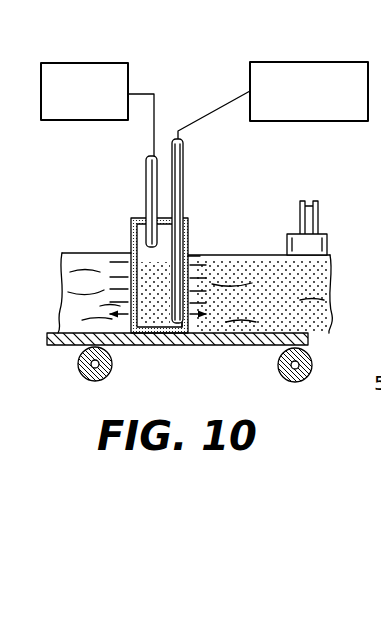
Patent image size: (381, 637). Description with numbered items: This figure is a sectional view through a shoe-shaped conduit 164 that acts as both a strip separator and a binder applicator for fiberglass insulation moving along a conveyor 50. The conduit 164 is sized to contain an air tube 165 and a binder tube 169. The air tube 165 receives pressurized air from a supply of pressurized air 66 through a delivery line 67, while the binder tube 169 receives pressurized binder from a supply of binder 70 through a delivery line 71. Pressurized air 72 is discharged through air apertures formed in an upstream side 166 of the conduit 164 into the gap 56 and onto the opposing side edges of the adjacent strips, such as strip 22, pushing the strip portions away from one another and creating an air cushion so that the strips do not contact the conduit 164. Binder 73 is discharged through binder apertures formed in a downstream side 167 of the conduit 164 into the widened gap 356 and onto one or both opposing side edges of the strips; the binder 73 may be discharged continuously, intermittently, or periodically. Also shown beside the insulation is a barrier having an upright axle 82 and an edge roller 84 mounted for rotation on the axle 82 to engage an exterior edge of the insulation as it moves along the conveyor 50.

The strip 22 is at (72, 262).
The conveyor 50 is at (73, 349).
The gap 56 is at (64, 314).
The supply of pressurized air 66 is at (42, 83).
The delivery line 67 is at (138, 95).
The supply of binder 70 is at (313, 74).
The delivery line 71 is at (213, 108).
The pressurized air 72 is at (119, 252).
The binder 73 is at (200, 253).
The upright axle 82 is at (312, 214).
The edge roller 84 is at (324, 247).
The shoe-shaped conduit 164 is at (194, 252).
The air tube 165 is at (150, 175).
The upstream side 166 is at (131, 227).
The downstream side 167 is at (192, 233).
The binder tube 169 is at (185, 153).
The gap 356 is at (253, 268).